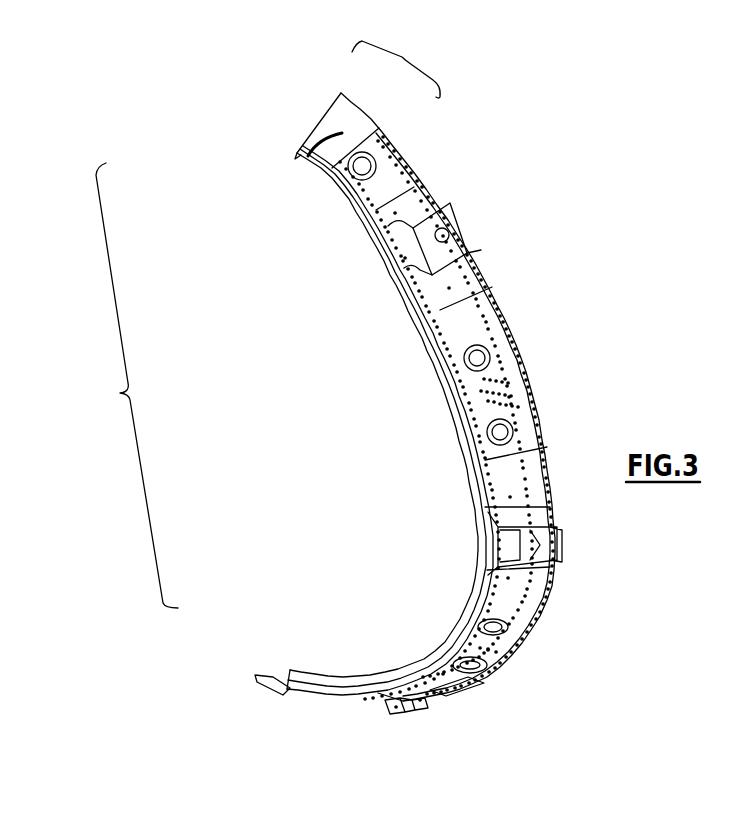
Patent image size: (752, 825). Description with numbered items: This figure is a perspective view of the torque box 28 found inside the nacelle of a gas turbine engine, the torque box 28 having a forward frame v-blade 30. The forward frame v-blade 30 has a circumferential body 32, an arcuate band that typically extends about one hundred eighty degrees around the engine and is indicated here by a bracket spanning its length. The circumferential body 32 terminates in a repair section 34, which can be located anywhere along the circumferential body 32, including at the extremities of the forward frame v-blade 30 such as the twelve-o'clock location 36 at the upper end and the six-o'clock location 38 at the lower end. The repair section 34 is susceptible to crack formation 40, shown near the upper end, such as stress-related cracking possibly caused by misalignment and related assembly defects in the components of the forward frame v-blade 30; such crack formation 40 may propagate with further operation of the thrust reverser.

The torque box 28 is at (488, 263).
The forward frame v-blade 30 is at (386, 258).
The circumferential body 32 is at (120, 393).
The repair section 34 is at (404, 57).
The twelve-o'clock location 36 is at (234, 108).
The six-o'clock location 38 is at (215, 708).
The crack formation 40 is at (322, 140).